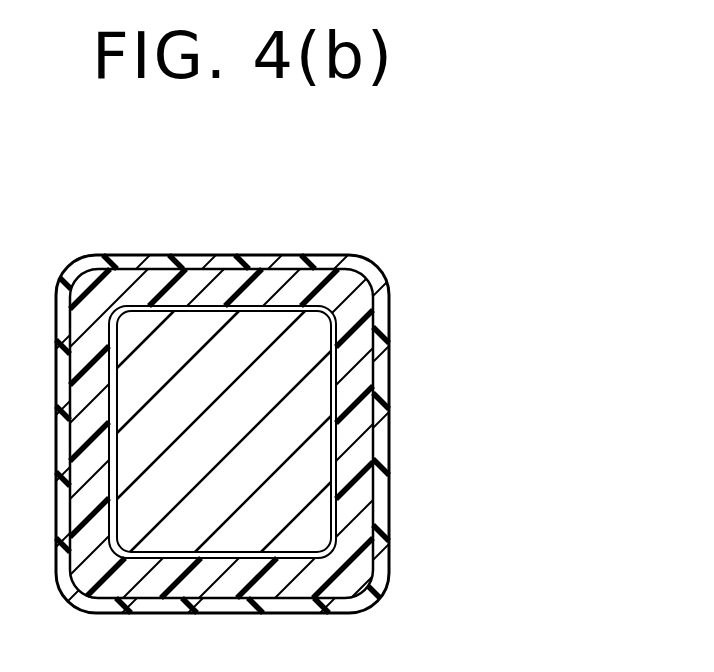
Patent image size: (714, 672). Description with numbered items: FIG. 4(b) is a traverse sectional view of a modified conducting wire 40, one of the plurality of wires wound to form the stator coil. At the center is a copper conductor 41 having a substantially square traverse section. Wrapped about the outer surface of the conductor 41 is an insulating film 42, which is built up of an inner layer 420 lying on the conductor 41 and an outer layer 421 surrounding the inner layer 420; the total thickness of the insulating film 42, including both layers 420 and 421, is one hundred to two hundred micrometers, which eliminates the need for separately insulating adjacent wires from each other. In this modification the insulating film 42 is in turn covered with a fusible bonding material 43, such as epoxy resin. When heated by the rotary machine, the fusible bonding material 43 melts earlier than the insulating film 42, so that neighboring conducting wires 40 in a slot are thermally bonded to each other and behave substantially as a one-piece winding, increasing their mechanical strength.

The conducting wire 40 is at (222, 224).
The copper conductor 41 is at (307, 457).
The insulating film 42 is at (520, 300).
The inner layer 420 is at (333, 380).
The outer layer 421 is at (360, 320).
The fusible bonding material 43 is at (383, 423).